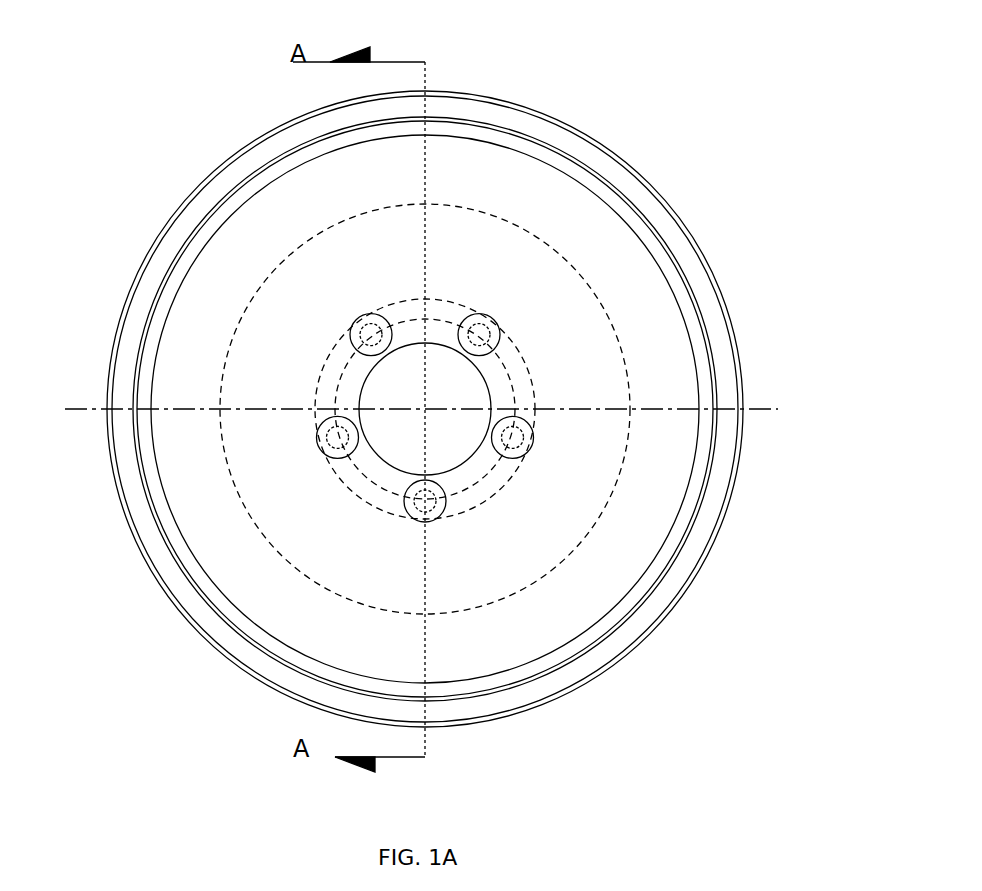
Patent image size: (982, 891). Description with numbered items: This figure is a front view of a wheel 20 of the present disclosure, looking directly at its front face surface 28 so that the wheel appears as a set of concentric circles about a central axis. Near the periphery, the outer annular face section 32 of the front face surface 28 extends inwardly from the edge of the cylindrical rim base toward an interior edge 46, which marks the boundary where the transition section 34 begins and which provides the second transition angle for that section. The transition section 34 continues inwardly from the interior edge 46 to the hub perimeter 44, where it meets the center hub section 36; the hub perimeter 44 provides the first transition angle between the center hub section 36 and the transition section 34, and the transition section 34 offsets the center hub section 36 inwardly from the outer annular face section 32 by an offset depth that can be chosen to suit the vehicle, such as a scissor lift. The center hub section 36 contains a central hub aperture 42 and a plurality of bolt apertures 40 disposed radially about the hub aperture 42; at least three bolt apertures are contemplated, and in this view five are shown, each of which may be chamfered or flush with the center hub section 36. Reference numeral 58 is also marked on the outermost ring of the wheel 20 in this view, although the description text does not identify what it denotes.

The wheel 20 is at (751, 177).
The front face surface 28 is at (228, 263).
The rim flange 58 is at (708, 282).
The outer annular face section 32 is at (205, 374).
The transition section 34 is at (272, 374).
The interior edge 46 is at (625, 392).
The hub perimeter 44 is at (535, 378).
The center hub section 36 is at (358, 485).
The hub aperture 42 is at (405, 397).
The bolt apertures 40 is at (515, 443).